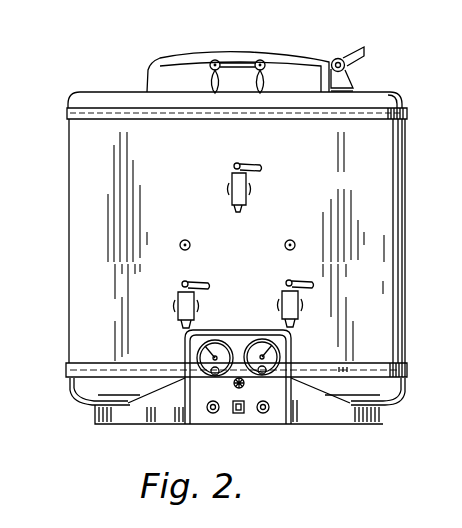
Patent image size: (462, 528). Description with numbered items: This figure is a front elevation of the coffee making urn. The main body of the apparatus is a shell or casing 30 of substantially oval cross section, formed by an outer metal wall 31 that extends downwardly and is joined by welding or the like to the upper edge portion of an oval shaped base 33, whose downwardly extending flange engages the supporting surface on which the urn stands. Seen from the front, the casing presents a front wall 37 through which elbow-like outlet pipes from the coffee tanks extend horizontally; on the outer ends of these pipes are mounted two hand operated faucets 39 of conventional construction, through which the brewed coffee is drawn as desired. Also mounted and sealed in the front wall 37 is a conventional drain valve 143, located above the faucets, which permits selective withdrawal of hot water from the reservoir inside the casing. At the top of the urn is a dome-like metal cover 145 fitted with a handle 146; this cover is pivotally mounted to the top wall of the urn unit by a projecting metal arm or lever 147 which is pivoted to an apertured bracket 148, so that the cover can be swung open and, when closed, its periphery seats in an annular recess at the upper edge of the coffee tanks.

The shell or casing 30 is at (69, 180).
The outer metal wall 31 is at (406, 182).
The base 33 is at (383, 417).
The front wall 37 is at (334, 128).
The hand operated faucets 39 is at (173, 312).
The drain valve 143 is at (249, 186).
The dome-like metal cover 145 is at (177, 58).
The handle 146 is at (249, 60).
The projecting metal arm or lever 147 is at (348, 54).
The apertured bracket 148 is at (348, 73).